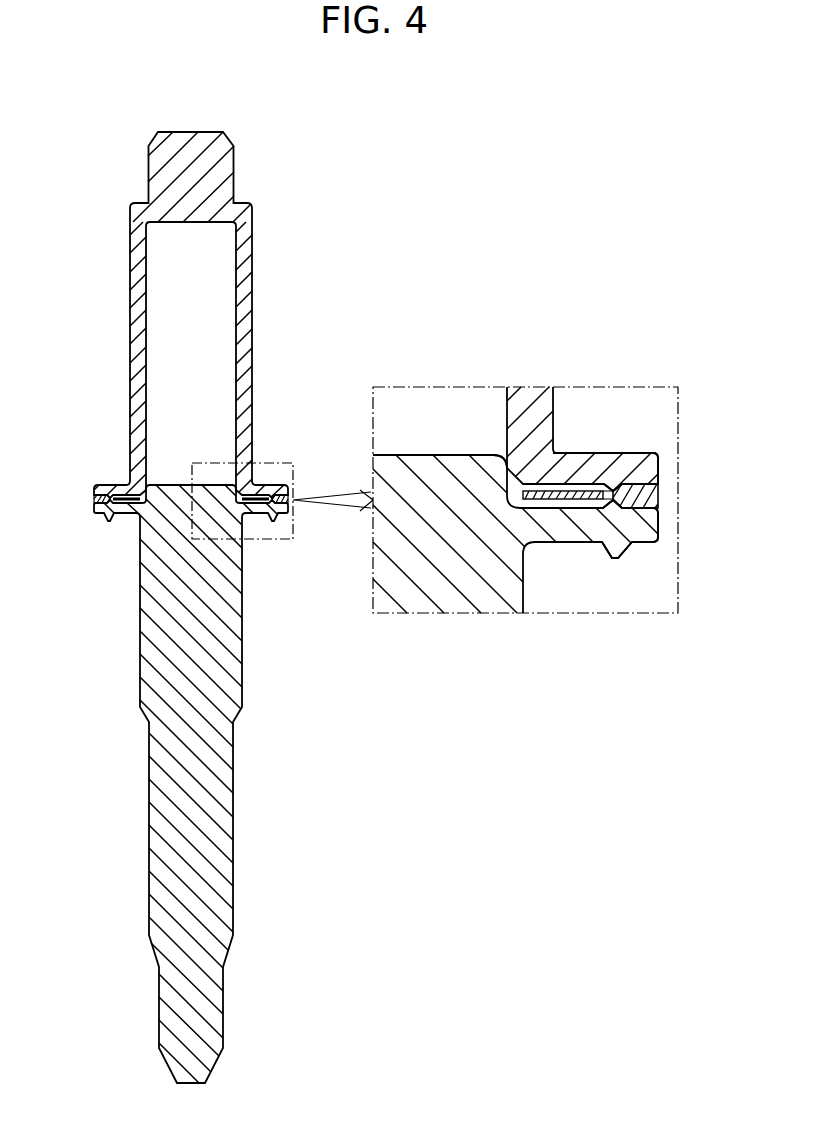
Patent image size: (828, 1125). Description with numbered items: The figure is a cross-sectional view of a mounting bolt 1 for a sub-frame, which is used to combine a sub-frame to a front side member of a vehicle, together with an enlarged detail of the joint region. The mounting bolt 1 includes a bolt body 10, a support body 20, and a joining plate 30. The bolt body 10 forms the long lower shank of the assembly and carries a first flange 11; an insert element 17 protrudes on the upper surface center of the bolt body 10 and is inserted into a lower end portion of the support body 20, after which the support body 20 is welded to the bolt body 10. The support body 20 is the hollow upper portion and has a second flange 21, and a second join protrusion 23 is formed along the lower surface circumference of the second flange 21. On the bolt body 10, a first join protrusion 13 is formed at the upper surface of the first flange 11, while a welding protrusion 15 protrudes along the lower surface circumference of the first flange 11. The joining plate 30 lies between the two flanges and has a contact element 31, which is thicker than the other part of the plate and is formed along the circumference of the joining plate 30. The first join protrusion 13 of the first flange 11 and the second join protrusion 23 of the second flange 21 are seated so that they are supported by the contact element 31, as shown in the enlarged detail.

The mounting bolt 1 is at (71, 112).
The bolt body 10 is at (109, 754).
The first flange 11 is at (645, 532).
The first join protrusion 13 is at (615, 506).
The welding protrusion 15 is at (618, 552).
The insert element 17 is at (427, 467).
The support body 20 is at (111, 296).
The second flange 21 is at (654, 468).
The second join protrusion 23 is at (613, 481).
The joining plate 30 is at (83, 496).
The contact element 31 is at (654, 497).